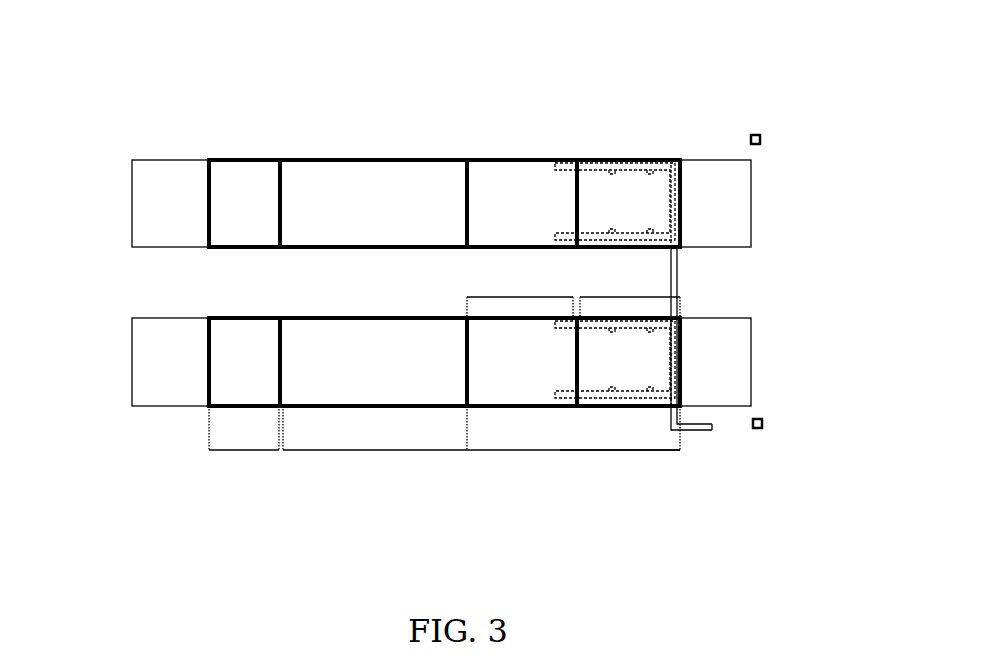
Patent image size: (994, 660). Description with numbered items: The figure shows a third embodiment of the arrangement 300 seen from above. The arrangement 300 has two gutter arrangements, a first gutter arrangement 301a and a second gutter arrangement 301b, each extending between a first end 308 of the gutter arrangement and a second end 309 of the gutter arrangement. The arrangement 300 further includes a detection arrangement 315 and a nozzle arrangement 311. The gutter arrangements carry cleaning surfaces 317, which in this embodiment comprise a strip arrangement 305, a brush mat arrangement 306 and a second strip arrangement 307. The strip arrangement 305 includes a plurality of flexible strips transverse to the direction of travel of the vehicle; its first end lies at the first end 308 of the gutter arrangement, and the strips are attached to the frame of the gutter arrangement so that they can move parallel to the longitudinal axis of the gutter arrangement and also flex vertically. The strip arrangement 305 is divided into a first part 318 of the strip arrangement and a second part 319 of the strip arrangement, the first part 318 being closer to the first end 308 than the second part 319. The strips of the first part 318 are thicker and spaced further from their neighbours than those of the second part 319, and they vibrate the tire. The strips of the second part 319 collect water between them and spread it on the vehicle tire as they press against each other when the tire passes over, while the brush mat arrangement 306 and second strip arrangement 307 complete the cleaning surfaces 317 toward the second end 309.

The arrangement 300 is at (80, 28).
The first gutter arrangement 301a is at (524, 422).
The second gutter arrangement 301b is at (530, 145).
The strip arrangement 305 is at (578, 450).
The brush mat arrangement 306 is at (363, 450).
The second strip arrangement 307 is at (243, 450).
The first end of the gutter arrangement 308 is at (681, 202).
The second end of the gutter arrangement 309 is at (208, 197).
The nozzle arrangement 311 is at (613, 163).
The detection arrangement 315 is at (762, 428).
The cleaning surfaces 317 is at (438, 145).
The first part of the strip arrangement 318 is at (630, 297).
The second part of the strip arrangement 319 is at (520, 297).